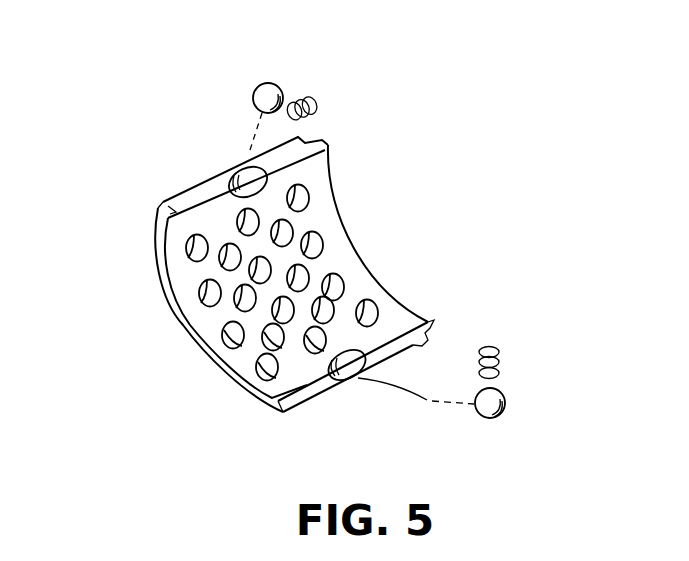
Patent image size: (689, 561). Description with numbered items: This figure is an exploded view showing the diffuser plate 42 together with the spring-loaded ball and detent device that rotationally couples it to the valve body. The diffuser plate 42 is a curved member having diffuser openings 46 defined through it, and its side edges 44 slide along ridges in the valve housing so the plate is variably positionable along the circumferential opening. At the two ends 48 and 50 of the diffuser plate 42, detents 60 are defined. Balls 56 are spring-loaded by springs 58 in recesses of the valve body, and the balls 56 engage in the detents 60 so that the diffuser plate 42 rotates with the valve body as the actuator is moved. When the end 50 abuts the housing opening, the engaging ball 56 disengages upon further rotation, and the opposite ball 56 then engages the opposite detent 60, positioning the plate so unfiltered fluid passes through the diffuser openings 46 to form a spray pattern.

The diffuser plate 42 is at (338, 253).
The side edges 44 is at (172, 308).
The diffuser openings 46 is at (290, 200).
The end of diffuser plate 48 is at (197, 199).
The end of diffuser plate 50 is at (418, 345).
The balls 56 is at (262, 86).
The springs 58 is at (307, 97).
The detents 60 is at (240, 168).